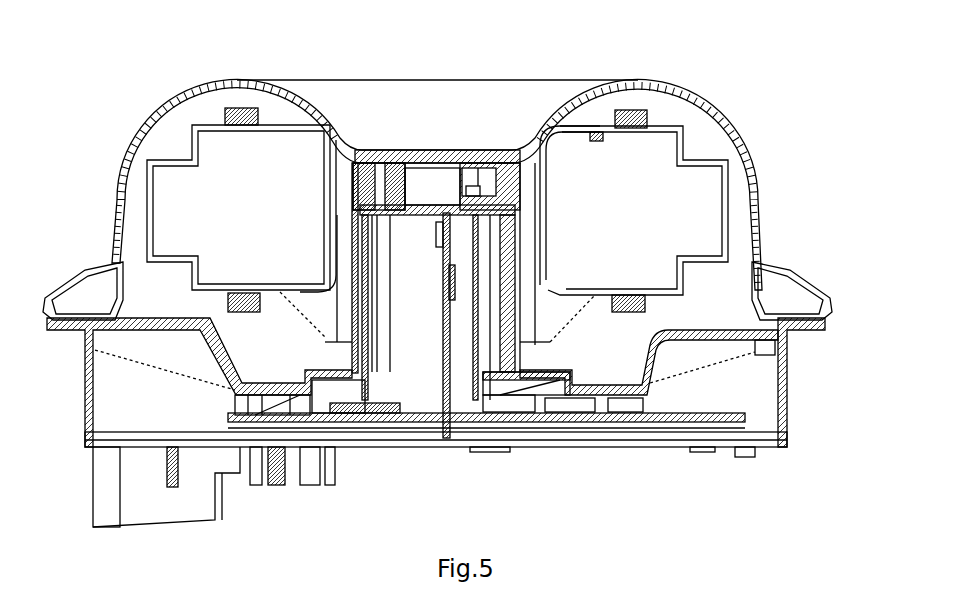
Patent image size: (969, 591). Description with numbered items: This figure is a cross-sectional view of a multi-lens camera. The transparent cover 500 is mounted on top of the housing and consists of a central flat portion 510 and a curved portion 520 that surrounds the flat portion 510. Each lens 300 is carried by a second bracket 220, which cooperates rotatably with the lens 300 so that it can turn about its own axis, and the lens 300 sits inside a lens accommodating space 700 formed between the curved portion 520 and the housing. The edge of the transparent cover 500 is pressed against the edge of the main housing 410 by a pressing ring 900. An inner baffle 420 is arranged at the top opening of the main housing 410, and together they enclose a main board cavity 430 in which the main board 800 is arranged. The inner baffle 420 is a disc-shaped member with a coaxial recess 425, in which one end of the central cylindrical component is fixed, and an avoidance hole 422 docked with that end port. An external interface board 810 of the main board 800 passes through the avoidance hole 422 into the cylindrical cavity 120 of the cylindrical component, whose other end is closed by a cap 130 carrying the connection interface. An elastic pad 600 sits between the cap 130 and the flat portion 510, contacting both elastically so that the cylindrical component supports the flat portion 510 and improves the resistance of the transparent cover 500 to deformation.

The transparent cover 500 is at (632, 22).
The flat portion 510 is at (488, 165).
The curved portion 520 is at (624, 82).
The elastic pad 600 is at (366, 168).
The cap 130 is at (415, 205).
The second bracket 220 is at (648, 112).
The lens 300 is at (712, 215).
The lens accommodating space 700 is at (735, 248).
The pressing ring 900 is at (815, 282).
The inner baffle 420 is at (790, 335).
The main housing 410 is at (790, 378).
The main board cavity 430 is at (780, 420).
The cylindrical cavity 120 is at (388, 432).
The avoidance hole 422 is at (411, 436).
The external interface board 810 is at (447, 440).
The main board 800 is at (574, 430).
The recess 425 is at (627, 430).